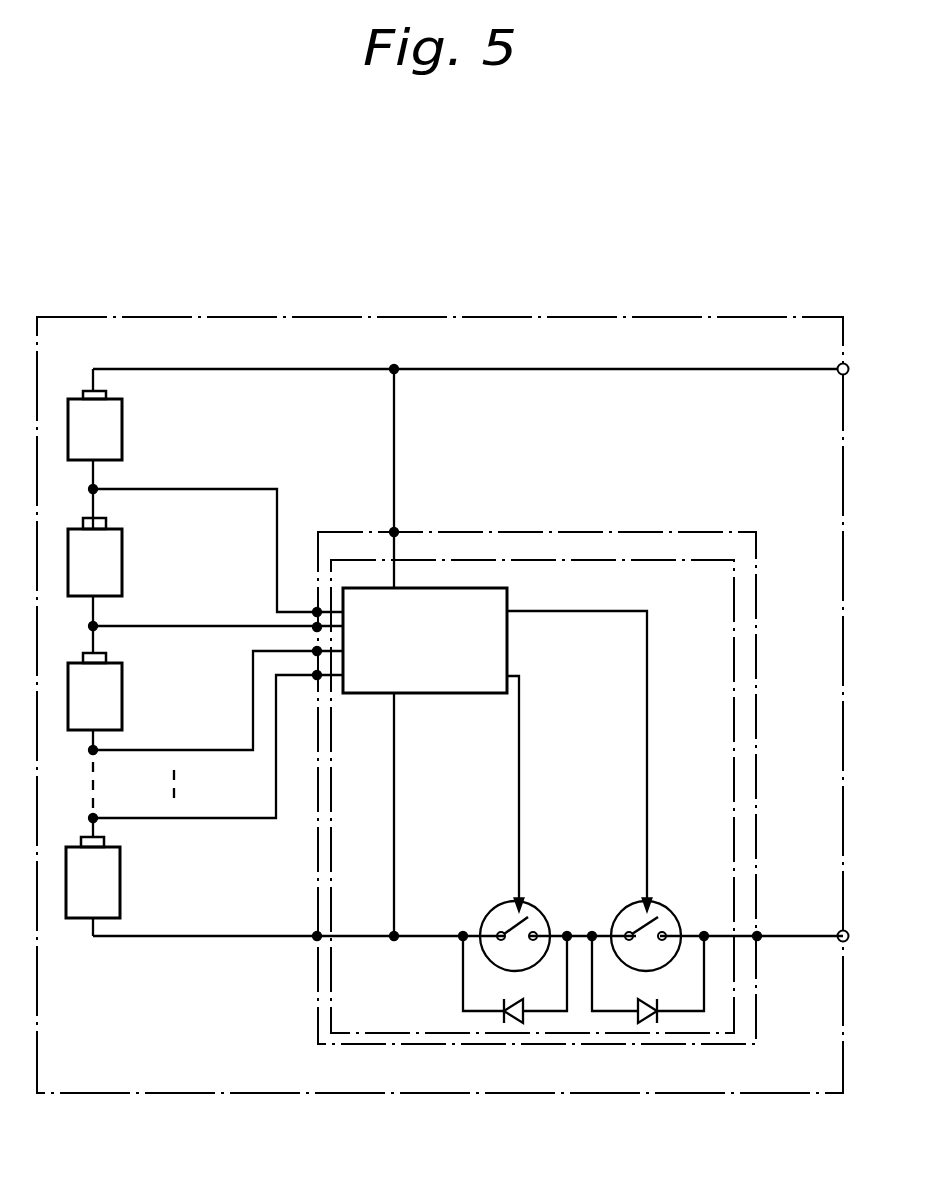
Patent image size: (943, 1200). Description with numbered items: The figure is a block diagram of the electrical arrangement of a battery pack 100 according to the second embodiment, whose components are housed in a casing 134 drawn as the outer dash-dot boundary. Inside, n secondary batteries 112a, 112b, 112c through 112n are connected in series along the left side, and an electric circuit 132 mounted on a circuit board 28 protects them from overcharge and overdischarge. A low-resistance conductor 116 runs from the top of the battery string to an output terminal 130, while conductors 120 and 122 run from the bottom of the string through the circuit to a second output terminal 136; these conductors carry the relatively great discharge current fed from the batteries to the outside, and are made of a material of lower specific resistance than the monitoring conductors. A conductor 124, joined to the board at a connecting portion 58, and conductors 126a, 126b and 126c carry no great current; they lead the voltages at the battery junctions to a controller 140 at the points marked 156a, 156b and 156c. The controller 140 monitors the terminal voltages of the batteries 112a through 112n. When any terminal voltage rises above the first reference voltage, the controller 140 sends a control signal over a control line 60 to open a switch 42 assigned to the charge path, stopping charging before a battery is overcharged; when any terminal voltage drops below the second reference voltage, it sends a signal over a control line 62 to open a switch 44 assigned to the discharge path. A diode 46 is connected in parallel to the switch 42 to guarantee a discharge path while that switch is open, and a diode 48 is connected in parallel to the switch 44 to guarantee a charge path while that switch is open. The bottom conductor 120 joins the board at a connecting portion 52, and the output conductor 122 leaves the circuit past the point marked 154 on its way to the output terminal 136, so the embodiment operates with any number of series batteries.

The battery pack 100 is at (493, 218).
The casing 134 is at (718, 1093).
The circuit board 28 is at (553, 530).
The electric circuit 132 is at (698, 560).
The conductor 116 is at (561, 372).
The output terminal 130 is at (845, 362).
The output terminal 136 is at (847, 930).
The conductor 124 is at (394, 405).
The connecting portion 58 is at (394, 532).
The secondary battery 112a is at (122, 419).
The secondary battery 112b is at (114, 530).
The secondary battery 112c is at (114, 702).
The secondary battery 112n is at (118, 917).
The conductor 126a is at (156, 489).
The conductor 126b is at (122, 626).
The conductor 126c is at (123, 750).
The controller input 156a is at (317, 612).
The controller input 156b is at (317, 627).
The controller input 156c is at (317, 651).
The controller 140 is at (507, 597).
The control line 60 is at (519, 765).
The control line 62 is at (647, 745).
The conductor 120 is at (152, 937).
The conductor 122 is at (776, 939).
The connecting portion 52 is at (314, 938).
The junction 154 is at (764, 929).
The switch 42 is at (528, 904).
The switch 44 is at (654, 904).
The diode 46 is at (518, 1023).
The diode 48 is at (651, 1023).